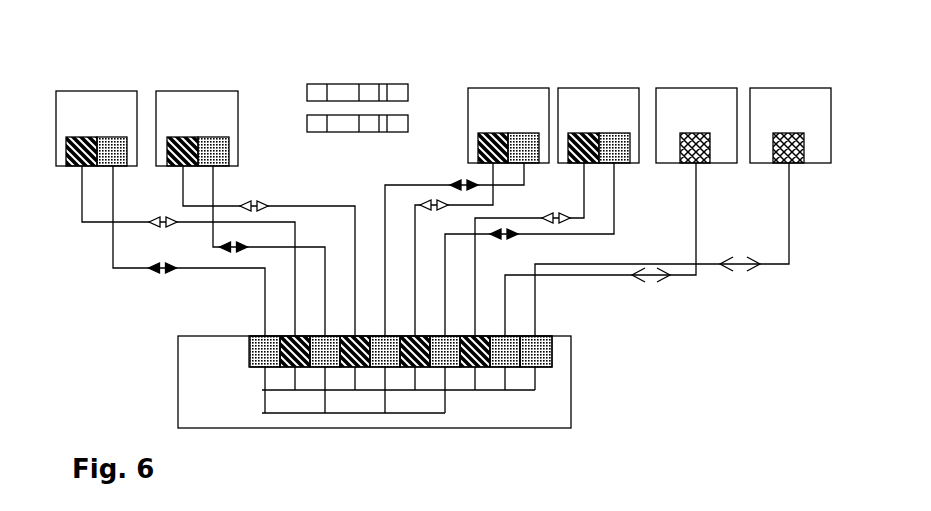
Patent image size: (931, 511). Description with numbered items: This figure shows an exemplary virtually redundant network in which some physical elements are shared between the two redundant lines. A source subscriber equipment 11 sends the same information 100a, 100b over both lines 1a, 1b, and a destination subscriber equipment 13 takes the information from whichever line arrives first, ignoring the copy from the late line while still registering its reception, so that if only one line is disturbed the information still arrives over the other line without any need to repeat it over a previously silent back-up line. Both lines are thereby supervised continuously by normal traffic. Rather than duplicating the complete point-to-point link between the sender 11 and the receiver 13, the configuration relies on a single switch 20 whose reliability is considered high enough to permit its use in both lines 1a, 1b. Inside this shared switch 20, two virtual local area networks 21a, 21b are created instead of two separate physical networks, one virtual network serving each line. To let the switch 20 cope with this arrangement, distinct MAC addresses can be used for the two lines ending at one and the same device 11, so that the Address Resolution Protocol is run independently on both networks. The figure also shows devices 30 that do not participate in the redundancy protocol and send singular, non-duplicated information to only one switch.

The source subscriber equipment 11 is at (103, 90).
The destination subscriber equipment 13 is at (507, 86).
The non-redundant device 30 is at (693, 85).
The information 100a is at (444, 204).
The information 100b is at (475, 184).
The first line 1a is at (93, 226).
The second line 1b is at (110, 268).
The switch 20 is at (178, 385).
The first virtual local area network 21a is at (262, 390).
The second virtual local area network 21b is at (262, 413).